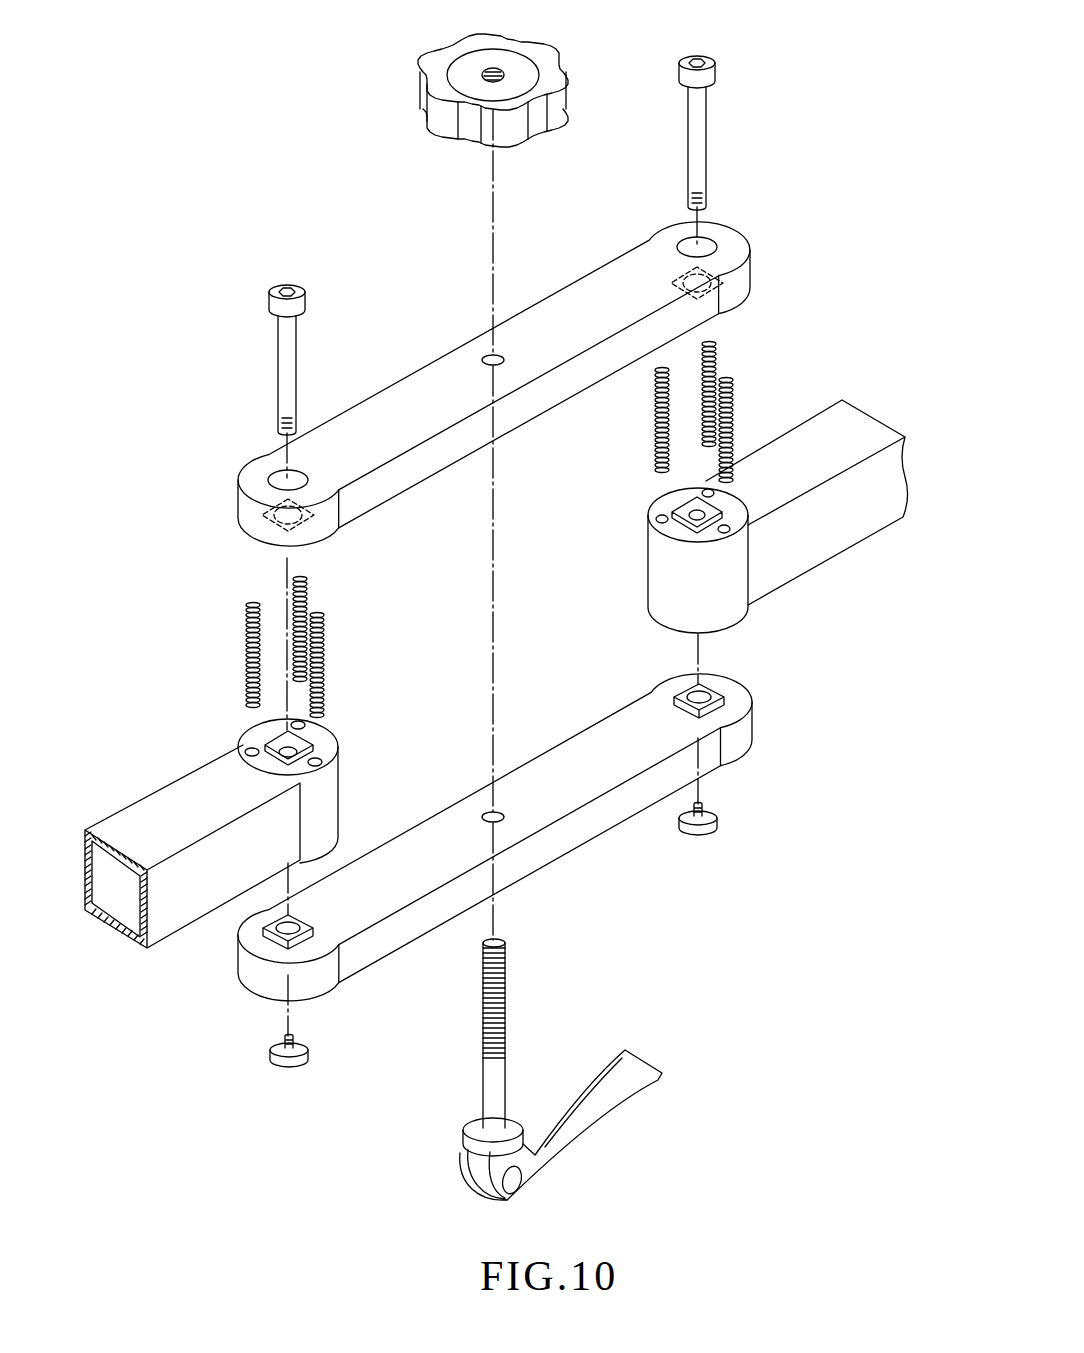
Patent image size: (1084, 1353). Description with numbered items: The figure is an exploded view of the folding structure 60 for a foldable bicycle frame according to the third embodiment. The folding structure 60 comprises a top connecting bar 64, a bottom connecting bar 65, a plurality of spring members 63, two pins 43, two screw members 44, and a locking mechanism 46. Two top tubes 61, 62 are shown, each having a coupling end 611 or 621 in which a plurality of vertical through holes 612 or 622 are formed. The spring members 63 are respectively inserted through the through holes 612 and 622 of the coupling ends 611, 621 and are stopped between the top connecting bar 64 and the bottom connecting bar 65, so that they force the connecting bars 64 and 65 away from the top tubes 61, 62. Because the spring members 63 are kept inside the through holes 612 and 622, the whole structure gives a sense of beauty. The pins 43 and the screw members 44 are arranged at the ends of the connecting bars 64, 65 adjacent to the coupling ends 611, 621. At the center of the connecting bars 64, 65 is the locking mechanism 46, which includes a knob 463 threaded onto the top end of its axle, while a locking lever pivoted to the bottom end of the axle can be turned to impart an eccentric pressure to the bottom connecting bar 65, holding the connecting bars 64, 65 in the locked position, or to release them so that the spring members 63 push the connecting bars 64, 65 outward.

The folding structure 60 is at (302, 205).
The knob 463 is at (425, 52).
The pins 43 is at (706, 148).
The top connecting bar 64 is at (420, 388).
The spring members 63 is at (733, 392).
The support tube 62 is at (845, 525).
The coupling end 621 is at (668, 535).
The vertical through holes 622 is at (648, 512).
The support tube 61 is at (137, 807).
The coupling end 611 is at (325, 740).
The vertical through holes 612 is at (246, 745).
The bottom connecting bar 65 is at (442, 828).
The screw members 44 is at (718, 832).
The locking mechanism 46 is at (528, 1096).